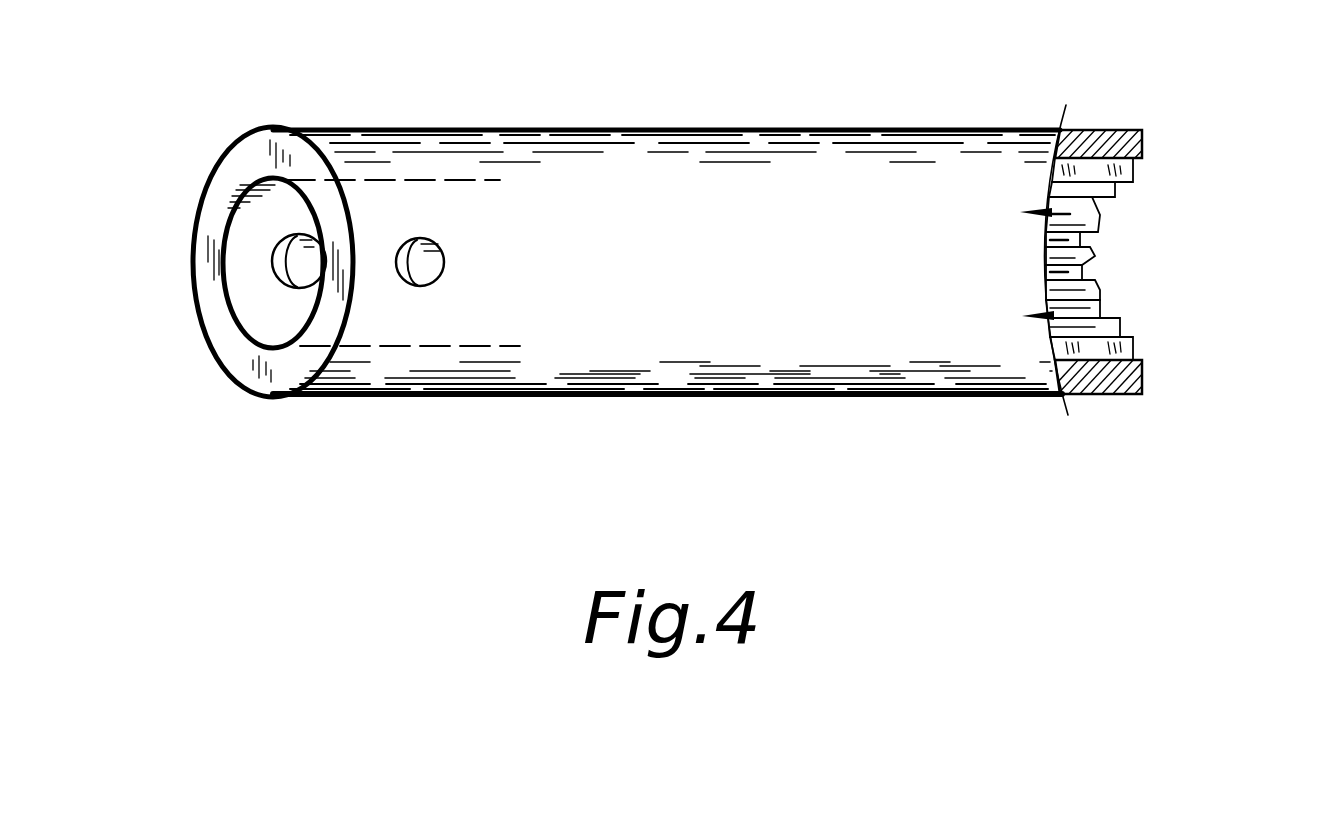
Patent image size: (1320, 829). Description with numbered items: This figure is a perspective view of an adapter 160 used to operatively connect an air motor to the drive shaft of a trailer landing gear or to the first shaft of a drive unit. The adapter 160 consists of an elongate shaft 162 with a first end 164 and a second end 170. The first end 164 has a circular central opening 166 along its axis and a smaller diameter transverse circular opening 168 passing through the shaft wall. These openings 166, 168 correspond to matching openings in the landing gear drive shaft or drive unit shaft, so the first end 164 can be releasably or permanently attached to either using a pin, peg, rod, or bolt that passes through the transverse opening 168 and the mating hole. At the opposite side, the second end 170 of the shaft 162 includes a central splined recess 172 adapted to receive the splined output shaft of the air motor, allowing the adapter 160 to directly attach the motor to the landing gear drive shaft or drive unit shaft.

The adapter 160 is at (685, 127).
The elongate shaft 162 is at (853, 347).
The first end 164 is at (488, 340).
The circular central opening 166 is at (248, 313).
The transverse circular opening 168 is at (437, 237).
The second end 170 is at (985, 128).
The central splined recess 172 is at (1100, 297).